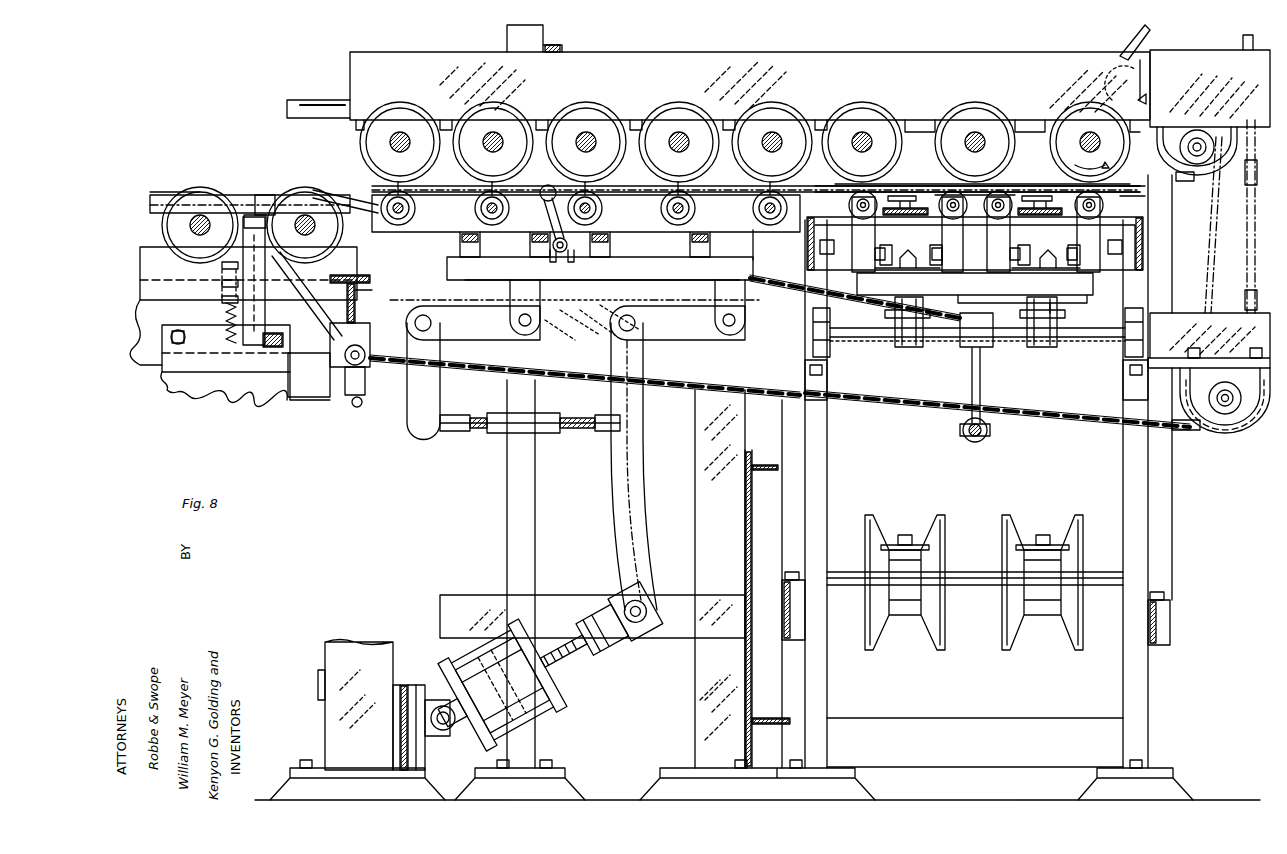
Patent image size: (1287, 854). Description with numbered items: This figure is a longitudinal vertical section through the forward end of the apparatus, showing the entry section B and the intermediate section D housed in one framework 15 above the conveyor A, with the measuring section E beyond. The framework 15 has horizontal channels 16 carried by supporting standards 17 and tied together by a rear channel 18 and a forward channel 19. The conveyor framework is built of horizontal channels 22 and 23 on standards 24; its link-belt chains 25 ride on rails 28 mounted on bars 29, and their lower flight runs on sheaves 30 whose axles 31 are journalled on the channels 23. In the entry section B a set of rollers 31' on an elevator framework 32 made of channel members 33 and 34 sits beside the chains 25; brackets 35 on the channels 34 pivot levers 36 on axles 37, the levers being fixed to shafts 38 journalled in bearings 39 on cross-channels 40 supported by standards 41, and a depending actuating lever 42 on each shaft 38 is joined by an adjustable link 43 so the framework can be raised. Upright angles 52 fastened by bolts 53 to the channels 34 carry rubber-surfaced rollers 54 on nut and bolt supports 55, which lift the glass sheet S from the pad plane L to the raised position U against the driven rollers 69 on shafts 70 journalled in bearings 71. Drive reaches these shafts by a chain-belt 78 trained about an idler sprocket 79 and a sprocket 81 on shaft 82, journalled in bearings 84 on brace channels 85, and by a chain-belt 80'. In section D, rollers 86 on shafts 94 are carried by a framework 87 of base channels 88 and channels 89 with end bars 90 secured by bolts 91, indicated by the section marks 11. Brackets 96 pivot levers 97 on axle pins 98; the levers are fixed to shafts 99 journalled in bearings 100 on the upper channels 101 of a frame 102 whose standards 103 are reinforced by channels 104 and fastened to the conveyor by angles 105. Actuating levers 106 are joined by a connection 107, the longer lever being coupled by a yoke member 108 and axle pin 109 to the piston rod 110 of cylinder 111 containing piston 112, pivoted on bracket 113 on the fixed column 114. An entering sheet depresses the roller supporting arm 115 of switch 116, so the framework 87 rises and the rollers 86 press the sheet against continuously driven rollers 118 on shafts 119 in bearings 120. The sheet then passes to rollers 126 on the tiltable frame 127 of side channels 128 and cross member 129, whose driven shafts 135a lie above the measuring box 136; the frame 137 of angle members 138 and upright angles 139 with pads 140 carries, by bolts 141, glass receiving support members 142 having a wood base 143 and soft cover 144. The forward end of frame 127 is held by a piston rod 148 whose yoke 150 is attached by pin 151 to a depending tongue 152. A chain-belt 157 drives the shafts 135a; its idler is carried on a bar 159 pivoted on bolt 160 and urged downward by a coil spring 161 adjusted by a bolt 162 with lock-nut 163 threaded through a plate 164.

The direction of travel 11 is at (480, 272).
The framework 15 is at (432, 72).
The horizontally disposed channels 16 is at (740, 80).
The supporting standards 17 is at (507, 492).
The channel 18 is at (545, 32).
The channel 19 is at (1125, 50).
The horizontally disposed channels 22 is at (815, 245).
The horizontally disposed channels 23 is at (1160, 622).
The standards 24 is at (830, 464).
The link-belt chains 25 is at (905, 190).
The rails 28 is at (912, 258).
The bars 29 is at (845, 212).
The sheaves 30 is at (945, 520).
The axles 31 is at (975, 595).
The rollers 31' is at (982, 168).
The elevator framework 32 is at (1070, 310).
The channel members 33 is at (890, 262).
The channel members 34 is at (1080, 300).
The brackets 35 is at (890, 318).
The levers 36 is at (905, 350).
The axles 37 is at (935, 340).
The shafts 38 is at (858, 345).
The bearings 39 is at (835, 325).
The cross-channels 40 is at (1122, 390).
The standards 41 is at (793, 482).
The actuating lever 42 is at (980, 390).
The adjustable link 43 is at (985, 436).
The upright angles 52 is at (856, 245).
The bolts 53 is at (955, 254).
The rubber-surface ball-bearing roller 54 is at (858, 190).
The nut and bolt support 55 is at (970, 190).
The driven rubber-surfaced rollers 69 is at (862, 118).
The shafts 70 is at (866, 135).
The bearings 71 is at (905, 125).
The chain-belt 78 is at (1175, 175).
The idler sprocket 79 is at (1150, 88).
The chain-belt 80' is at (1186, 194).
The sprocket 81 is at (1212, 428).
The shaft 82 is at (1232, 412).
The bearings 84 is at (1250, 412).
The brace channels 85 is at (1210, 330).
The rubber-surfaced rollers 86 is at (488, 200).
The framework 87 is at (755, 240).
The base channels 88 is at (650, 280).
The channels 89 is at (455, 244).
The bars 90 is at (615, 232).
The bolts 91 is at (470, 222).
The shafts 94 is at (416, 208).
The brackets 96 is at (510, 293).
The levers 97 is at (458, 336).
The axle pins 98 is at (530, 318).
The shafts 99 is at (440, 322).
The bearings 100 is at (395, 368).
The upper channels 101 is at (150, 345).
The frame 102 is at (665, 375).
The standards 103 is at (700, 472).
The channels 104 is at (740, 450).
The angles 105 is at (800, 286).
The actuating lever 106 is at (440, 392).
The yoke and adjustable link connection 107 is at (490, 432).
The yoke member 108 is at (625, 650).
The axle pin 109 is at (650, 630).
The piston rod 110 is at (580, 655).
The cylinder 111 is at (565, 708).
The piston 112 is at (548, 728).
The bracket 113 is at (422, 690).
The fixed column 114 is at (318, 662).
The roller supporting arm 115 is at (548, 218).
The double action switch 116 is at (572, 262).
The rubber-surfaced rollers 118 is at (395, 120).
The shafts 119 is at (400, 152).
The bearings 120 is at (636, 122).
The rubber-surfaced rollers 126 is at (205, 190).
The tiltable frame 127 is at (340, 262).
The side channels 128 is at (165, 262).
The structural member 129 is at (370, 292).
The driven shafts 135a is at (190, 228).
The box 136 is at (265, 385).
The frame 137 is at (200, 368).
The angle members 138 is at (268, 348).
The angles 139 is at (265, 312).
The pad 140 is at (240, 226).
The bolts 141 is at (275, 192).
The glass receiving support members 142 is at (262, 190).
The base 143 is at (158, 210).
The cover 144 is at (158, 192).
The piston rod 148 is at (358, 410).
The yoke 150 is at (350, 410).
The pin 151 is at (358, 340).
The depending tongue 152 is at (352, 320).
The chain-belt 157 is at (352, 200).
The bar 159 is at (338, 362).
The bolt 160 is at (165, 350).
The coil spring 161 is at (228, 322).
The bolt 162 is at (222, 270).
The lock-nut 163 is at (222, 288).
The plate 164 is at (222, 300).
The conveyor A is at (1140, 548).
The entry section B is at (938, 118).
The intermediate section D is at (660, 100).
The weighing or measuring section E is at (200, 180).
The glass sheet S is at (1080, 178).
The raised sheet position U is at (1125, 182).
The pad plane L is at (1128, 205).